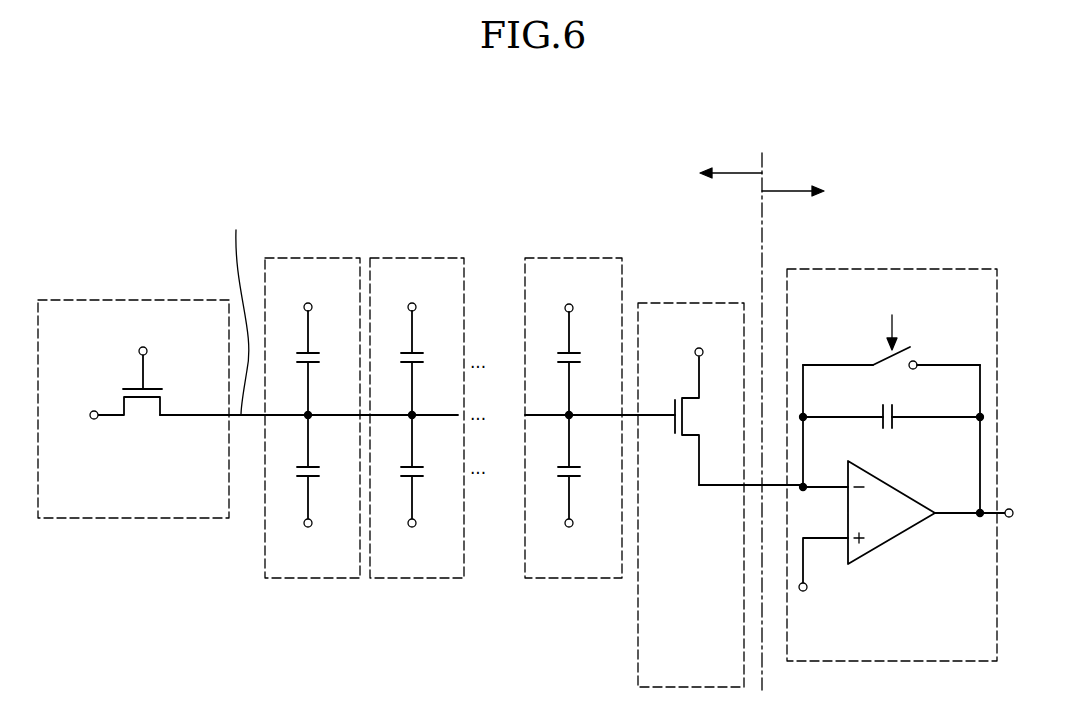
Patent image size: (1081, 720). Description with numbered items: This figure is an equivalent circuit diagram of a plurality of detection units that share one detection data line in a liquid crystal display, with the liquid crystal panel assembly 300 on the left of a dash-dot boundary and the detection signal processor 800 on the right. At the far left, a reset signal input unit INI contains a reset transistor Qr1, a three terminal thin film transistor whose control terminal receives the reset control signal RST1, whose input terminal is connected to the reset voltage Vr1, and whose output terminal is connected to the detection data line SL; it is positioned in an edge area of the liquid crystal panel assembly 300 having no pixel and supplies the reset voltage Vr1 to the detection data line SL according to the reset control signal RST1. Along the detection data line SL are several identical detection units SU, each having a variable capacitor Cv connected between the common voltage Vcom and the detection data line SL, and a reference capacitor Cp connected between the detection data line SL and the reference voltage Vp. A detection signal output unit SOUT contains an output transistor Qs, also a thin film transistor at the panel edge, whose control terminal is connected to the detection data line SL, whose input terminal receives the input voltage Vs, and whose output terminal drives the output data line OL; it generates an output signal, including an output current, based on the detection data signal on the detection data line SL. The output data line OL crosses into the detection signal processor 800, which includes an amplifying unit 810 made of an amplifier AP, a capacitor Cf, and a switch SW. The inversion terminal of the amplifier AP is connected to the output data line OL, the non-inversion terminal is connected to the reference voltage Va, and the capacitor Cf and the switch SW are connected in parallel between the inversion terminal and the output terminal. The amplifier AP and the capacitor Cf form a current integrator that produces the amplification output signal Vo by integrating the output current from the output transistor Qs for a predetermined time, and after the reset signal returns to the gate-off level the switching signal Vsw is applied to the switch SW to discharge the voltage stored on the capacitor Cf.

The reset signal input unit INI is at (96, 298).
The detection data line SL is at (238, 309).
The detection unit SU is at (308, 256).
The detection signal output unit SOUT is at (687, 302).
The liquid crystal panel assembly 300 is at (731, 161).
The detection signal processor 800 is at (793, 179).
The amplifying unit 810 is at (914, 268).
The reset control signal RST1 is at (143, 355).
The reset transistor Qr1 is at (130, 416).
The reset voltage Vr1 is at (76, 415).
The common voltage Vcom is at (428, 296).
The variable capacitor Cv is at (451, 363).
The reference capacitor Cp is at (451, 467).
The reference voltage Vp is at (436, 537).
The input voltage Vs is at (696, 340).
The output transistor Qs is at (739, 421).
The output data line OL is at (698, 478).
The switching signal Vsw is at (889, 321).
The switch SW is at (891, 356).
The capacitor Cf is at (891, 409).
The amplifier AP is at (888, 545).
The reference voltage Va is at (819, 579).
The amplification output signal Vo is at (1010, 514).